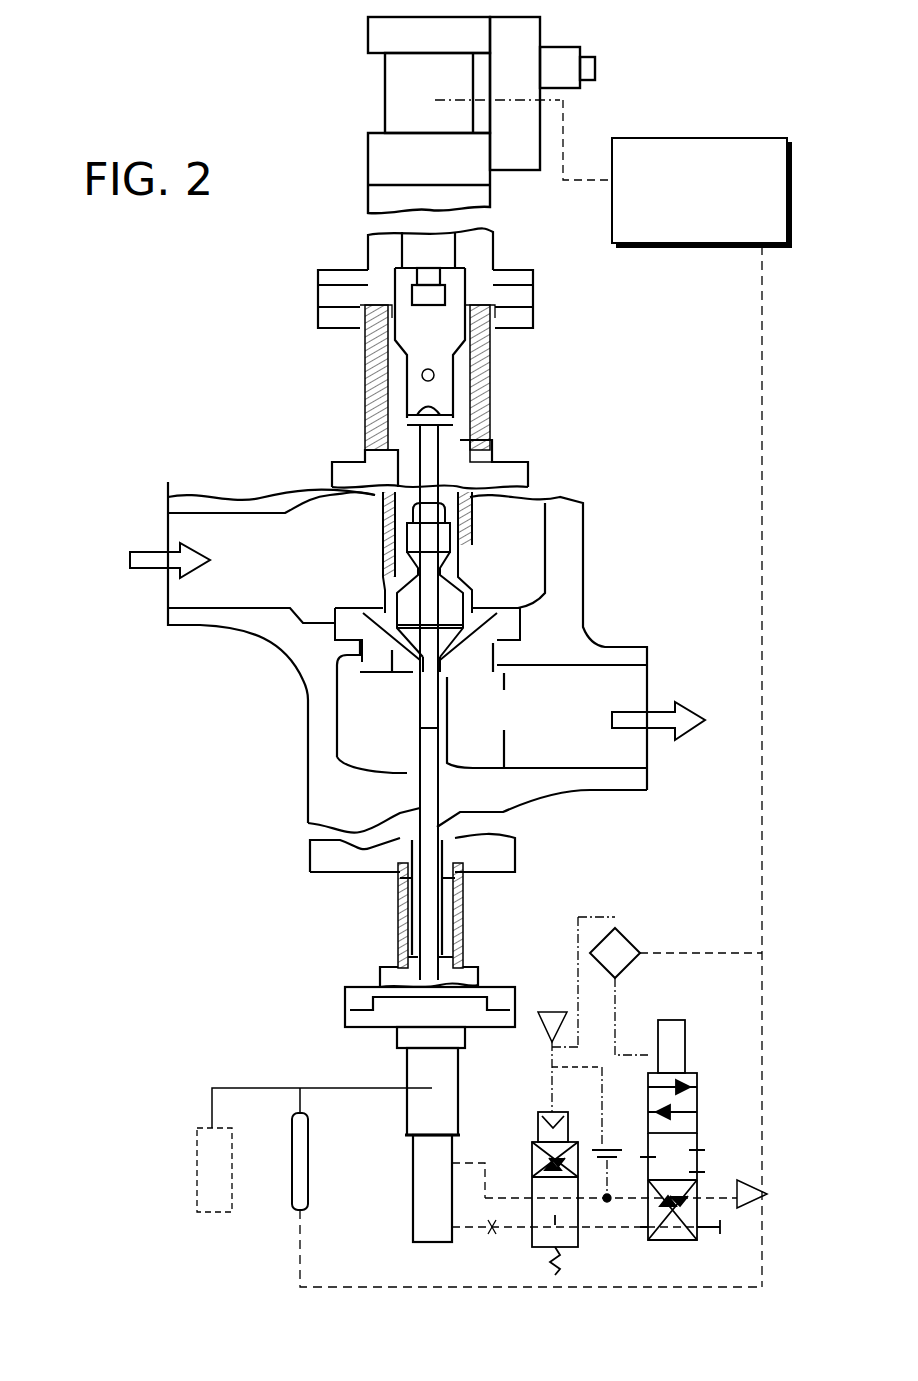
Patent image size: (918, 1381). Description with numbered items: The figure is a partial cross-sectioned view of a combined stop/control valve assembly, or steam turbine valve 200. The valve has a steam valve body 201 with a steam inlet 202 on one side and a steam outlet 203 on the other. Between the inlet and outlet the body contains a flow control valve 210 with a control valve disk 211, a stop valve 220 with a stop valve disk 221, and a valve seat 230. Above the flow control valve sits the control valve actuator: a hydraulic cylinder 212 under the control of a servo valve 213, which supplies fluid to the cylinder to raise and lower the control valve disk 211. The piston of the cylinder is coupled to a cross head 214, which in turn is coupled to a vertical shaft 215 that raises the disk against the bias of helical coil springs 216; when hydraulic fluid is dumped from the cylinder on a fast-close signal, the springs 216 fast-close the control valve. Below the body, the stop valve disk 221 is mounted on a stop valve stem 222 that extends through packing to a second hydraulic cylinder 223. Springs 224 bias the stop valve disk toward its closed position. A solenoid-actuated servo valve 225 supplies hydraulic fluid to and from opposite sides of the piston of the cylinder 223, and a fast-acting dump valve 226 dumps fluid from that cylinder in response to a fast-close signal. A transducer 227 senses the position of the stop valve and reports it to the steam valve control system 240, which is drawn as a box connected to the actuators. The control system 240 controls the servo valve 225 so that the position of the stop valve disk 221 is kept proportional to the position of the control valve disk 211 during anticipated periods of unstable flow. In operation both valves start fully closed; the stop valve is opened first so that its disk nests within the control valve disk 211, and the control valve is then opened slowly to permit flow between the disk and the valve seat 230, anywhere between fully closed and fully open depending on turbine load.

The steam turbine valve 200 is at (258, 455).
The steam valve body 201 is at (233, 620).
The steam inlet 202 is at (168, 495).
The steam outlet 203 is at (627, 748).
The flow control valve 210 is at (572, 308).
The control valve disk 211 is at (390, 577).
The hydraulic cylinder 212 is at (383, 112).
The servo valve 213 is at (590, 96).
The cross head 214 is at (425, 318).
The vertical shaft 215 is at (481, 445).
The helical coil springs 216 is at (480, 376).
The stop valve 220 is at (272, 996).
The stop valve disk 221 is at (427, 643).
The stop valve stem 222 is at (427, 797).
The hydraulic cylinder 223 is at (413, 1222).
The springs 224 is at (395, 938).
The servo valve 225 is at (697, 1120).
The fast-acting dump valve 226 is at (580, 1212).
The transducer 227 is at (308, 1168).
The valve seat 230 is at (493, 620).
The steam valve control system 240 is at (610, 220).